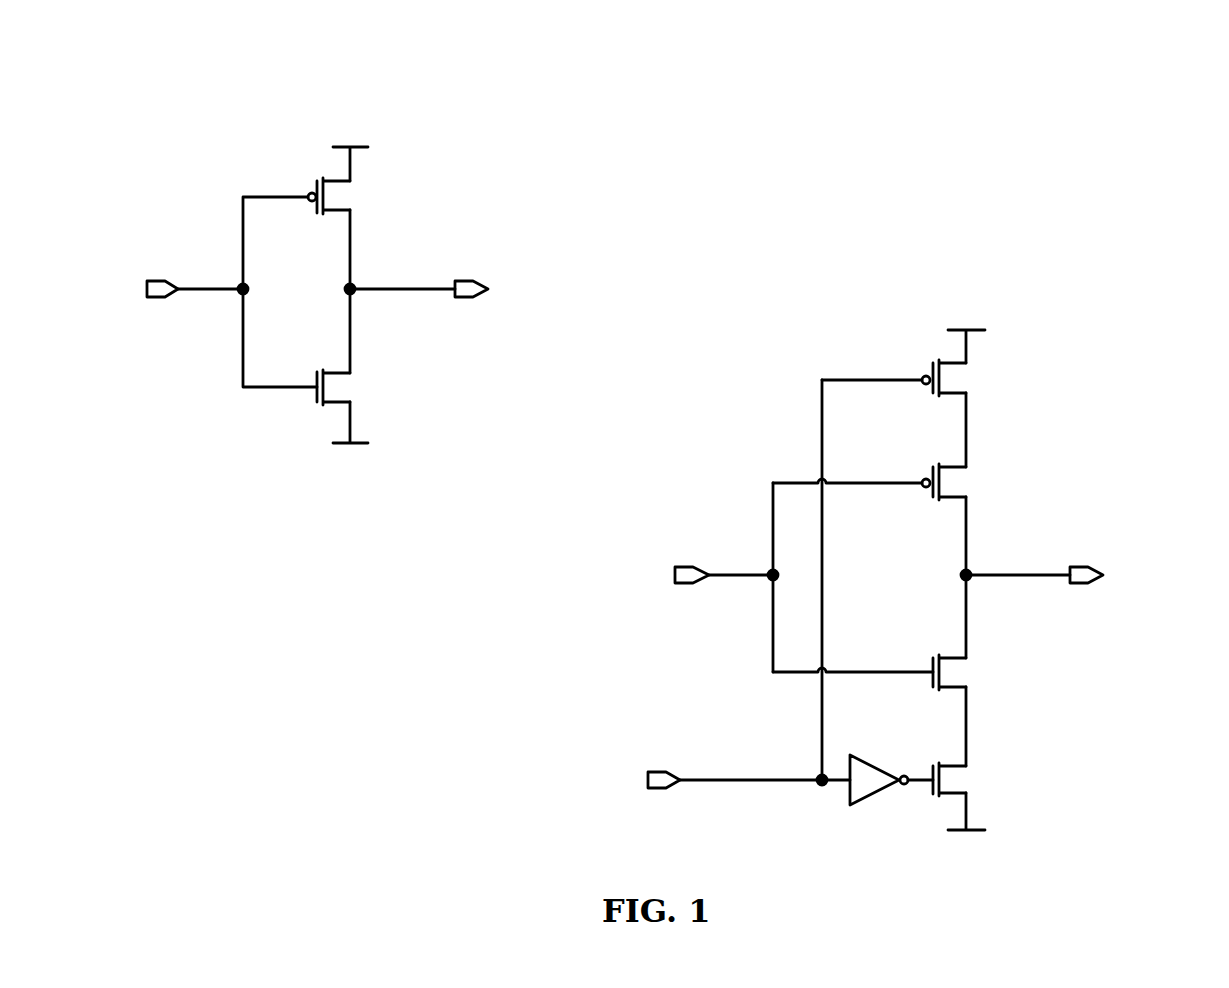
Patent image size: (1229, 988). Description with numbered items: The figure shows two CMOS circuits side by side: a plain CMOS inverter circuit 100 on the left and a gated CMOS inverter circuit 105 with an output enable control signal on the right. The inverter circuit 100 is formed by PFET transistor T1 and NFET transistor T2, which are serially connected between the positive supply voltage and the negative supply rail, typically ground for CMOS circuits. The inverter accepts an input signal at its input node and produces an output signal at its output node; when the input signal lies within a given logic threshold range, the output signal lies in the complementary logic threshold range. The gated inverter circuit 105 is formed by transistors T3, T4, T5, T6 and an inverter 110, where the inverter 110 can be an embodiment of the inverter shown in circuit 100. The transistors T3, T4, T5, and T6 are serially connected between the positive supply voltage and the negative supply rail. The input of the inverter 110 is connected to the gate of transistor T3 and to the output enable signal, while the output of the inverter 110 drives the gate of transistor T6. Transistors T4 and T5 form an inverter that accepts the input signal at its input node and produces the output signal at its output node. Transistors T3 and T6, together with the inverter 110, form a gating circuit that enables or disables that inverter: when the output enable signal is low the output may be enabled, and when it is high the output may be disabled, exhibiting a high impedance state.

The CMOS inverter circuit 100 is at (332, 251).
The gated CMOS inverter circuit 105 is at (889, 584).
The inverter 110 is at (850, 800).
The PFET transistor T1 is at (345, 196).
The NFET transistor T2 is at (349, 387).
The transistor T3 is at (959, 378).
The transistor T4 is at (959, 482).
The transistor T5 is at (965, 672).
The transistor T6 is at (965, 779).